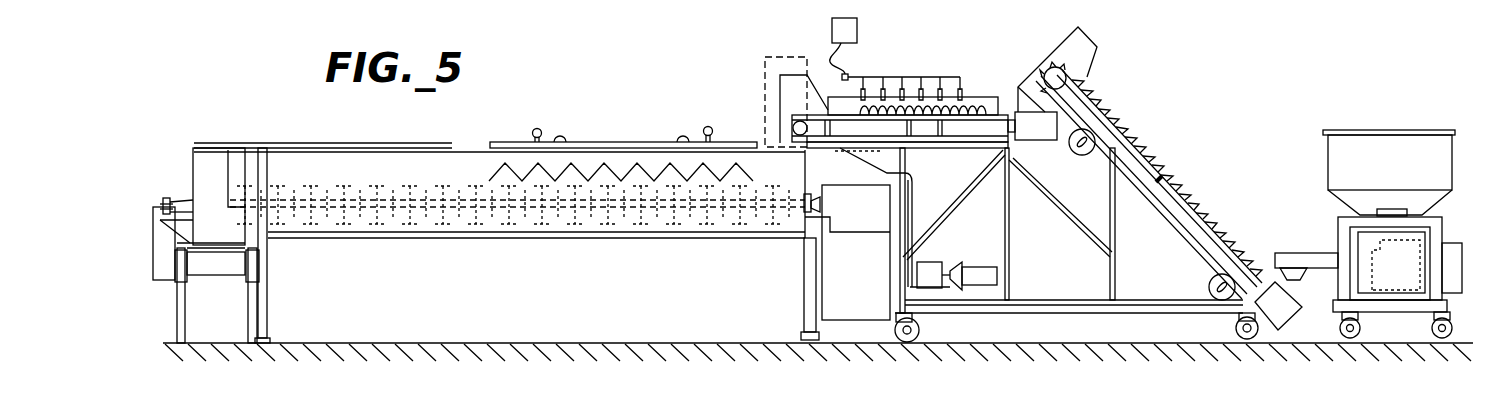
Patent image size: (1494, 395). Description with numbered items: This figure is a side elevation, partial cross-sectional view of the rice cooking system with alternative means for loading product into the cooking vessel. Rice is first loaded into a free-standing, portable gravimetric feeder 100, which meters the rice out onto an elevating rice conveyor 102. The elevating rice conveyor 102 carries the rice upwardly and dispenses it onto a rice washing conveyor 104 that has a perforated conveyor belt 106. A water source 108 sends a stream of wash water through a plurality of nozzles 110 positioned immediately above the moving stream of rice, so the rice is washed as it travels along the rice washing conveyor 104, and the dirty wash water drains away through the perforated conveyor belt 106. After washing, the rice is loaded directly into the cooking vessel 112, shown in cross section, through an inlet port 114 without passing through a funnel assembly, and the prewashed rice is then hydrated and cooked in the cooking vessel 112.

The gravimetric feeder 100 is at (1380, 145).
The elevating rice conveyor 102 is at (1182, 170).
The rice washing conveyor 104 is at (995, 114).
The perforated conveyor belt 106 is at (982, 108).
The water source 108 is at (843, 28).
The nozzles 110 is at (921, 90).
The cooking vessel 112 is at (638, 223).
The inlet port 114 is at (776, 147).